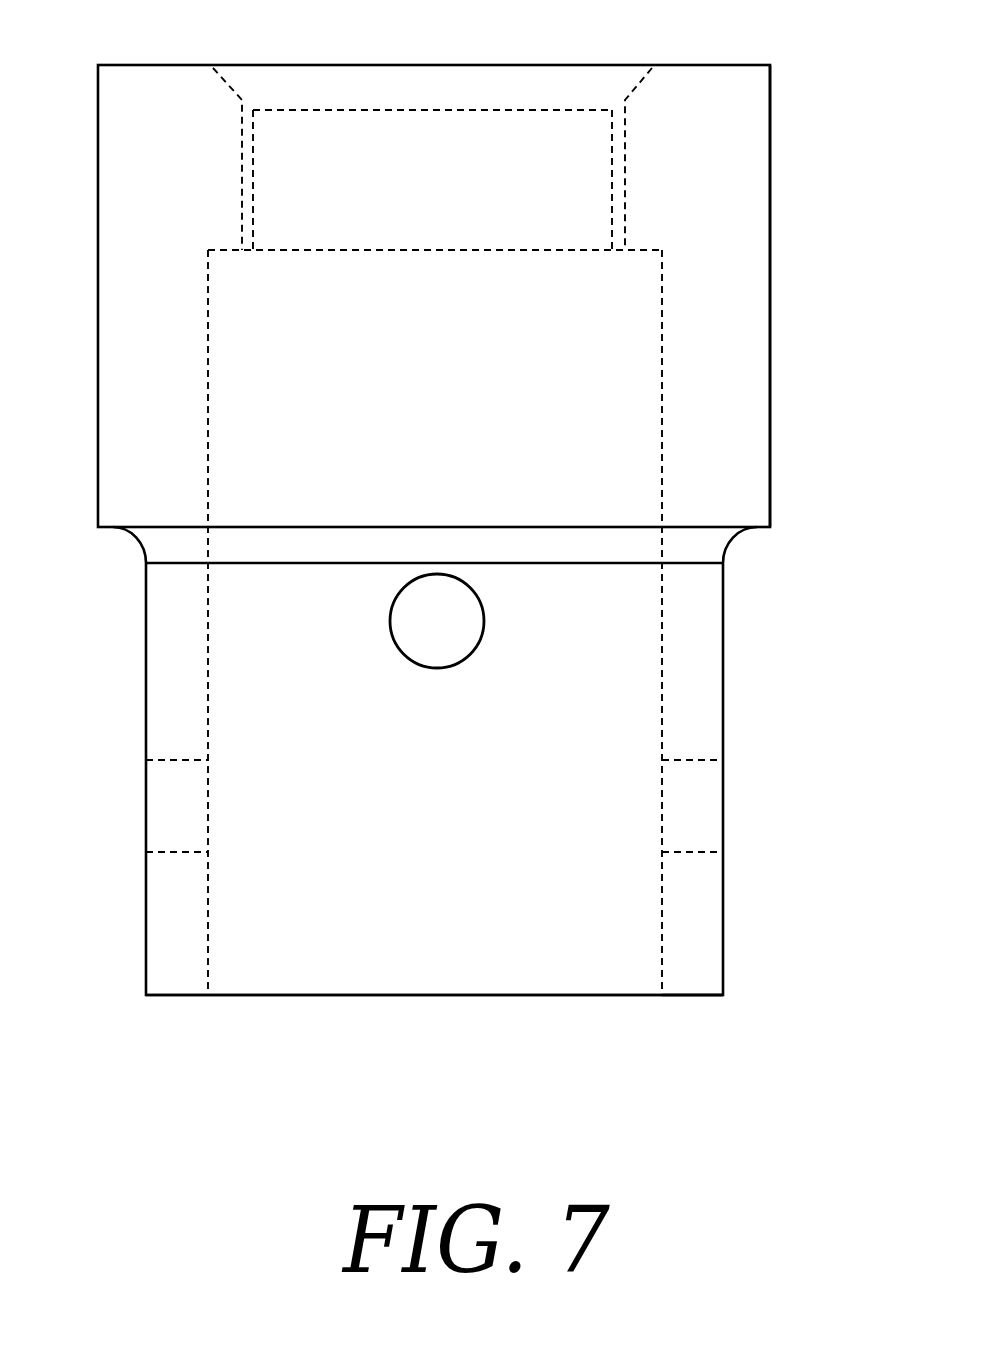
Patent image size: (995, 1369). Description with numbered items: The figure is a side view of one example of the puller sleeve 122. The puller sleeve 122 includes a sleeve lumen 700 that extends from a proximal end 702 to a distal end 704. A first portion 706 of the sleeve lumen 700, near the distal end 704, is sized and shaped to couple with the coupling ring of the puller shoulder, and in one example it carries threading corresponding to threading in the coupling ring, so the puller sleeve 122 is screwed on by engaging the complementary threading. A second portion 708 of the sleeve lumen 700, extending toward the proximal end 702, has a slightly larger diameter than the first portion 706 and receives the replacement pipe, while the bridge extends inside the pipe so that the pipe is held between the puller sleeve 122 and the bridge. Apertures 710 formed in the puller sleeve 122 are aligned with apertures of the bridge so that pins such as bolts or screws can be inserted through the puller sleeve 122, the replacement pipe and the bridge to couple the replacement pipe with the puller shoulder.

The distal end 704 is at (740, 65).
The puller sleeve 122 is at (756, 350).
The first portion 706 is at (253, 181).
The sleeve lumen 700 is at (647, 662).
The second portion 708 is at (259, 975).
The proximal end 702 is at (693, 997).
The apertures 710 is at (438, 655).